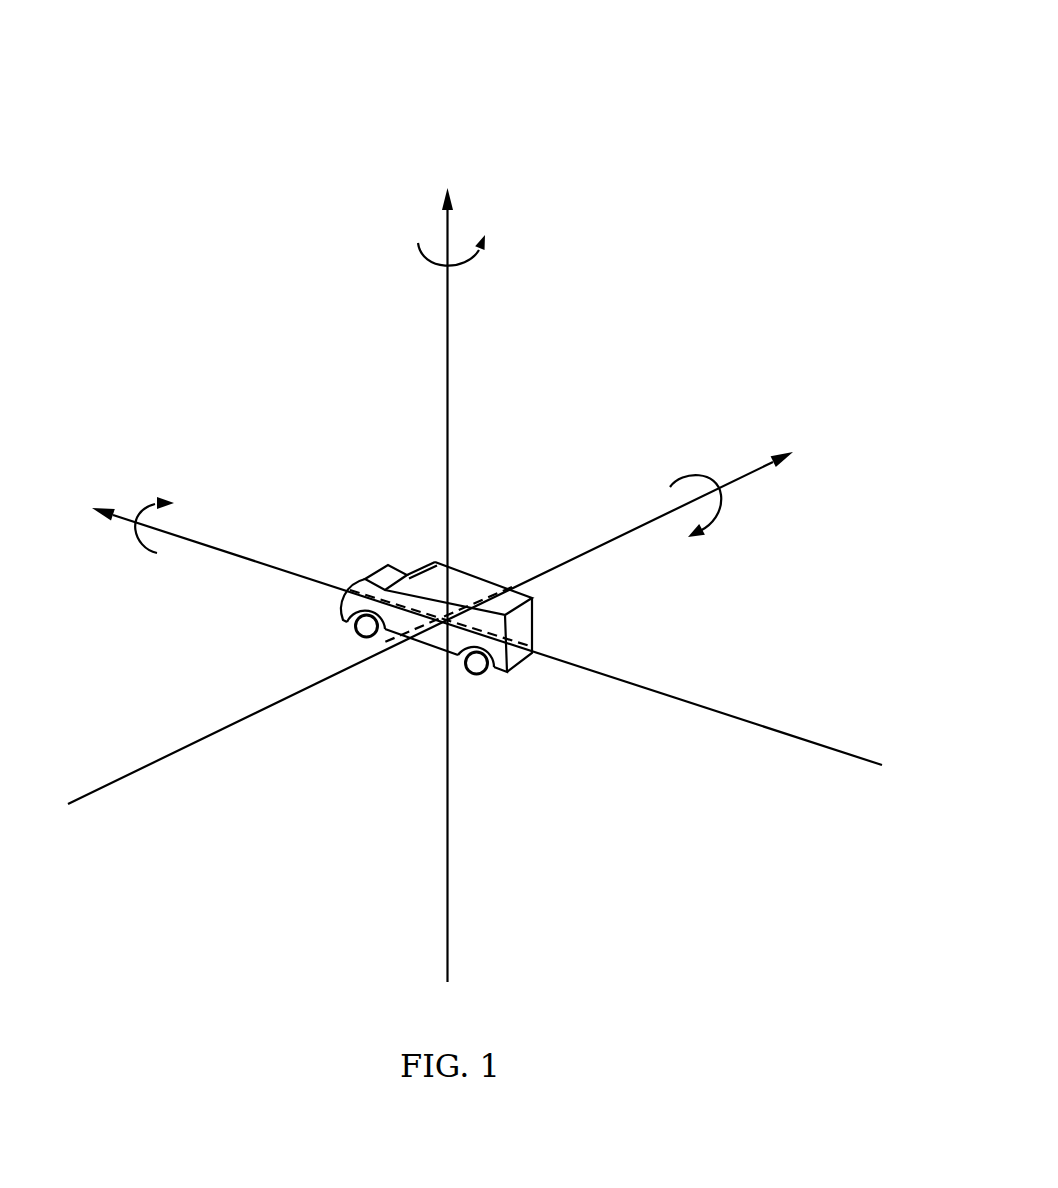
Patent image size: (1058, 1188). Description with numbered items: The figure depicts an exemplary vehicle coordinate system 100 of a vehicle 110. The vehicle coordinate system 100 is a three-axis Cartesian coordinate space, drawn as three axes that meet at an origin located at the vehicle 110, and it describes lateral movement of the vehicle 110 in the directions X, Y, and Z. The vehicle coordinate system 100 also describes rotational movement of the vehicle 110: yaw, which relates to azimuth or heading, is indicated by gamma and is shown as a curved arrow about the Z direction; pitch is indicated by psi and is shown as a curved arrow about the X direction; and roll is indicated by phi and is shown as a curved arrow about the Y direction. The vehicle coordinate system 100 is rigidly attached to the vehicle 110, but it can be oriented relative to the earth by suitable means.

The vehicle coordinate system 100 is at (665, 95).
The vehicle 110 is at (468, 572).
The X direction X is at (442, 622).
The Y direction Y is at (474, 630).
The Z direction Z is at (447, 566).